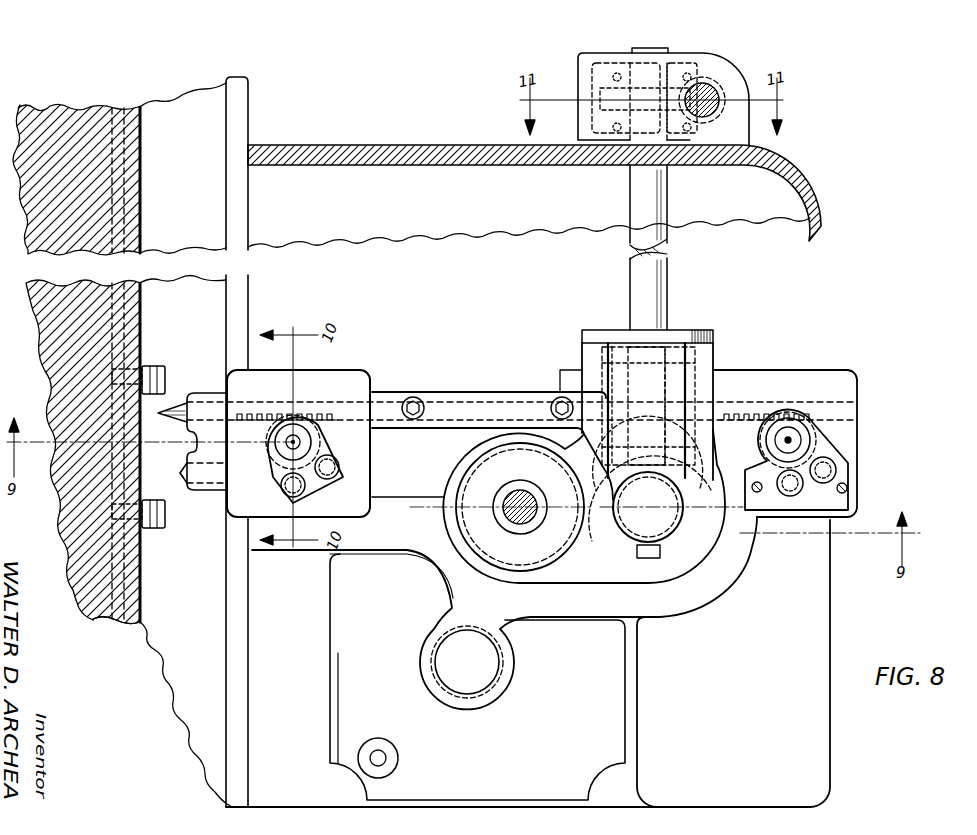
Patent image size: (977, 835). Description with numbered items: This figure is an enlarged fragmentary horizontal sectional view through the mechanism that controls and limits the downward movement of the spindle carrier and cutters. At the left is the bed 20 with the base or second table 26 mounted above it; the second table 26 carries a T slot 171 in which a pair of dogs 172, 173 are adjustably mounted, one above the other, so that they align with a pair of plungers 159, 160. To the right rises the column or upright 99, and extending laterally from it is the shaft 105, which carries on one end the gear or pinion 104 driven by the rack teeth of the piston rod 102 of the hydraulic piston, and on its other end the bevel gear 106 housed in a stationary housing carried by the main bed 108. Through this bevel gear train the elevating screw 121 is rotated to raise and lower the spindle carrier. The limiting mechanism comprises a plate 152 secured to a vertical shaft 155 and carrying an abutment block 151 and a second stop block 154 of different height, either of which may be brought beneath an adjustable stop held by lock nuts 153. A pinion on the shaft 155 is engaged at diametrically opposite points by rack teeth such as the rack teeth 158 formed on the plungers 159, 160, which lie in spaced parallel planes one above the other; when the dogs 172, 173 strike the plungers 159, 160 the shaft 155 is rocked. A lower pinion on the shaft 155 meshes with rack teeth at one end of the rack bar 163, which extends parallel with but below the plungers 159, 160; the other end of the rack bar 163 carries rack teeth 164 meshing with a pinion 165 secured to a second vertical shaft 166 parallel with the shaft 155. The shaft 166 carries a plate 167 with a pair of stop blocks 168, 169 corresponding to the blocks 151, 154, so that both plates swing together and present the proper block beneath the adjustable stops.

The bed 20 is at (193, 708).
The base or second table 26 is at (138, 190).
The column or upright 99 is at (430, 146).
The piston rod 102 is at (716, 88).
The gear or pinion 104 is at (620, 97).
The shaft 105 is at (667, 287).
The bevel gear 106 is at (677, 457).
The main bed 108 is at (805, 628).
The elevating screw 121 is at (510, 495).
The abutment block 151 is at (282, 489).
The plate 152 is at (227, 511).
The lock nuts 153 is at (285, 395).
The second stop block 154 is at (338, 462).
The shaft 155 is at (301, 442).
The rack teeth 158 is at (270, 462).
The plunger 159 is at (165, 410).
The plunger 160 is at (184, 476).
The rack bar 163 is at (490, 383).
The rack teeth 164 is at (748, 410).
The pinion 165 is at (822, 450).
The second vertical shaft 166 is at (796, 437).
The plate 167 is at (803, 486).
The stop block 168 is at (793, 513).
The stop block 169 is at (836, 470).
The T slot 171 is at (121, 614).
The dog 172 is at (163, 530).
The dog 173 is at (160, 367).